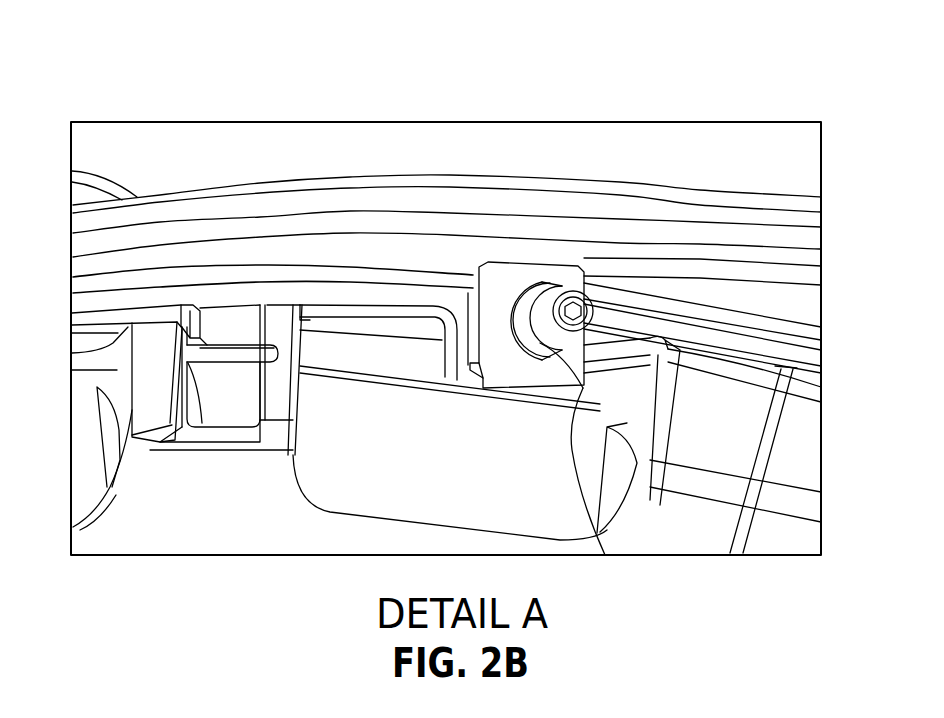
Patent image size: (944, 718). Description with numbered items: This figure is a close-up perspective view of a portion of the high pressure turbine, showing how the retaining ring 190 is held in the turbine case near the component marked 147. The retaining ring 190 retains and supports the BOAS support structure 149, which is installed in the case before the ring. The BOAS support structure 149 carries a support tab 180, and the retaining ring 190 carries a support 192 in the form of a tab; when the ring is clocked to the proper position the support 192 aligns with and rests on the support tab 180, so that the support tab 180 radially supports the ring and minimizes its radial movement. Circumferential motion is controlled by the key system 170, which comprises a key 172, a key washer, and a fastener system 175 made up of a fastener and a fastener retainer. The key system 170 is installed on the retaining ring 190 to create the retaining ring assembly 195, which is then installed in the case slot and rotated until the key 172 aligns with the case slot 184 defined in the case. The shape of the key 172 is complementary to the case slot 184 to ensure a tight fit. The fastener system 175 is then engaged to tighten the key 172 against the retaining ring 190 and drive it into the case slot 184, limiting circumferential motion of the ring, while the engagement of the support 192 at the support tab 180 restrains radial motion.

The roof rail 147 is at (433, 267).
The BOAS support structure 149 is at (800, 466).
The key system 170 is at (500, 273).
The key 172 is at (583, 280).
The fastener system 175 is at (605, 555).
The support tab 180 is at (175, 399).
The case slot 184 is at (590, 281).
The retaining ring 190 is at (273, 303).
The support 192 is at (213, 317).
The retaining ring assembly 195 is at (617, 345).